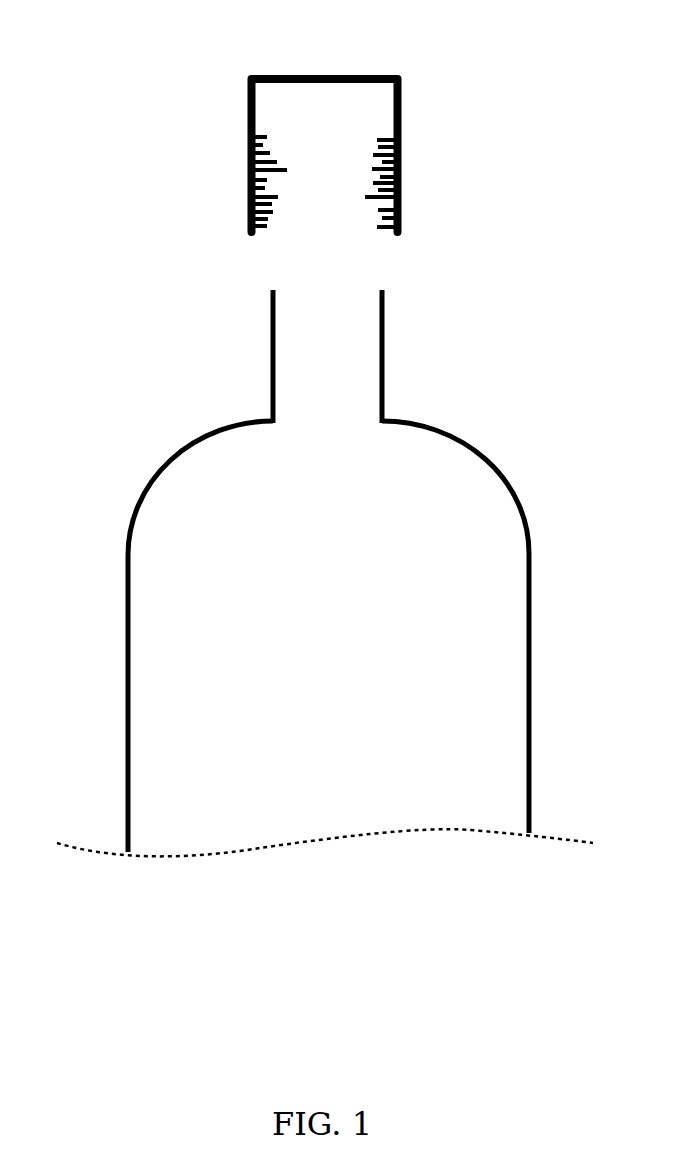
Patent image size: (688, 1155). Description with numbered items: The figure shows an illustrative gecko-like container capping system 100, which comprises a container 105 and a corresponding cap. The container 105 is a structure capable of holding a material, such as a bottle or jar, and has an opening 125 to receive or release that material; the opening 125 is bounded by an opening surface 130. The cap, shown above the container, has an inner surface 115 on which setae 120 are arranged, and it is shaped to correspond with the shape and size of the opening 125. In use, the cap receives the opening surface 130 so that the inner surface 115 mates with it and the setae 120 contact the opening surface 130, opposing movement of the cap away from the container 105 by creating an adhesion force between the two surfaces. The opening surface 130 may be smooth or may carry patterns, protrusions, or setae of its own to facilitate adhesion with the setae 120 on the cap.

The gecko-like container capping system 100 is at (113, 150).
The container 105 is at (388, 76).
The inner surface 115 is at (257, 122).
The setae 120 is at (371, 195).
The opening 125 is at (343, 291).
The opening surface 130 is at (385, 353).